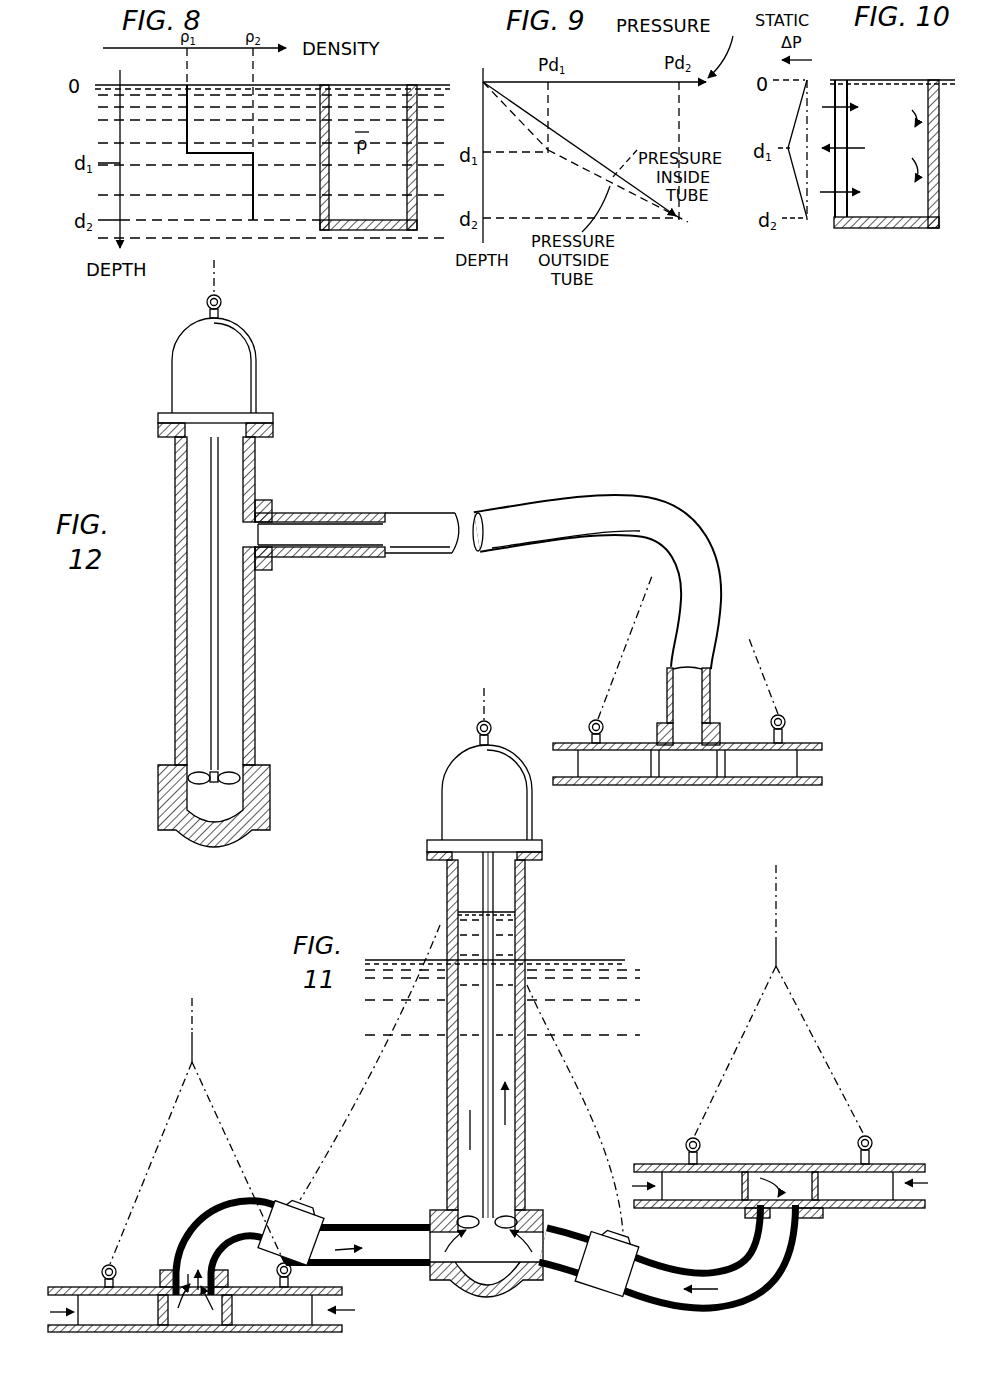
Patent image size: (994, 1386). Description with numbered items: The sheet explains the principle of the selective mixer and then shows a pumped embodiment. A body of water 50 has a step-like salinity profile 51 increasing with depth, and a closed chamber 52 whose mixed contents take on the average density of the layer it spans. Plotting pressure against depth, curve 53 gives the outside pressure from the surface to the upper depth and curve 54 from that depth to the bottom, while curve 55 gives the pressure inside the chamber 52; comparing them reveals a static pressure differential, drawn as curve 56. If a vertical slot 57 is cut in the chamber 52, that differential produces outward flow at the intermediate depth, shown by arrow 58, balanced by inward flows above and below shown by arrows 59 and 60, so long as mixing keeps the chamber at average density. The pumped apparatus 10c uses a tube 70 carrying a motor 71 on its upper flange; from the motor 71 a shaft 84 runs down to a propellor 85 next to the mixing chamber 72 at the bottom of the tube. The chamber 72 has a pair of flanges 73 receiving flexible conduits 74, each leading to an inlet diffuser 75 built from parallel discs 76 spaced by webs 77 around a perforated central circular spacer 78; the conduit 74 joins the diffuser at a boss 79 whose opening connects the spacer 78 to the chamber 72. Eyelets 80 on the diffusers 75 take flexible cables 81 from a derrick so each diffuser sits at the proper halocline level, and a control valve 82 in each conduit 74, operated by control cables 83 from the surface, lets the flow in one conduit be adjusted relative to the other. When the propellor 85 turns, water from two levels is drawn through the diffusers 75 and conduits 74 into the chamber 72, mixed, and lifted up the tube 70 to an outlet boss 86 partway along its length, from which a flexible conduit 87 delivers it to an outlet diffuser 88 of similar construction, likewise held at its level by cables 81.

In FIG. 8, the body of water 50 is at (276, 96).
In FIG. 8, the salinity profile 51 is at (254, 176).
In FIG. 8, the chamber 52 is at (412, 85).
In FIG. 10, the chamber 52 is at (929, 80).
In FIG. 9, the curve 53 is at (514, 113).
In FIG. 9, the curve 54 is at (563, 152).
In FIG. 9, the curve 55 is at (600, 172).
In FIG. 10, the curve 56 is at (794, 121).
In FIG. 10, the vertical slot 57 is at (850, 86).
In FIG. 10, the arrow 58 is at (850, 148).
In FIG. 10, the arrow 59 is at (828, 105).
In FIG. 10, the arrow 60 is at (818, 193).
In FIG. 11, the tube 70 is at (525, 941).
In FIG. 12, the motor 71 is at (224, 395).
In FIG. 11, the motor 71 is at (498, 817).
In FIG. 11, the chamber 72 is at (496, 1297).
In FIG. 11, the flanges 73 is at (540, 1212).
In FIG. 11, the flexible conduits 74 is at (384, 1223).
In FIG. 11, the inlet diffuser 75 is at (488, 1234).
In FIG. 11, the parallel discs 76 is at (910, 1164).
In FIG. 11, the webs 77 is at (676, 1168).
In FIG. 11, the perforated central circular spacer 78 is at (800, 1194).
In FIG. 11, the boss 79 is at (815, 1214).
In FIG. 11, the eyelets 80 is at (107, 1264).
In FIG. 12, the flexible cables 81 is at (757, 669).
In FIG. 11, the flexible cables 81 is at (482, 700).
In FIG. 11, the control valve 82 is at (287, 1218).
In FIG. 11, the control cables 83 is at (386, 1077).
In FIG. 12, the shaft 84 is at (218, 611).
In FIG. 11, the shaft 84 is at (494, 889).
In FIG. 12, the propellor 85 is at (230, 774).
In FIG. 12, the outlet boss 86 is at (265, 505).
In FIG. 12, the flexible conduit 87 is at (412, 512).
In FIG. 12, the outlet diffuser 88 is at (808, 737).
In FIG. 12, the apparatus 10c is at (282, 650).
In FIG. 11, the apparatus 10c is at (542, 913).